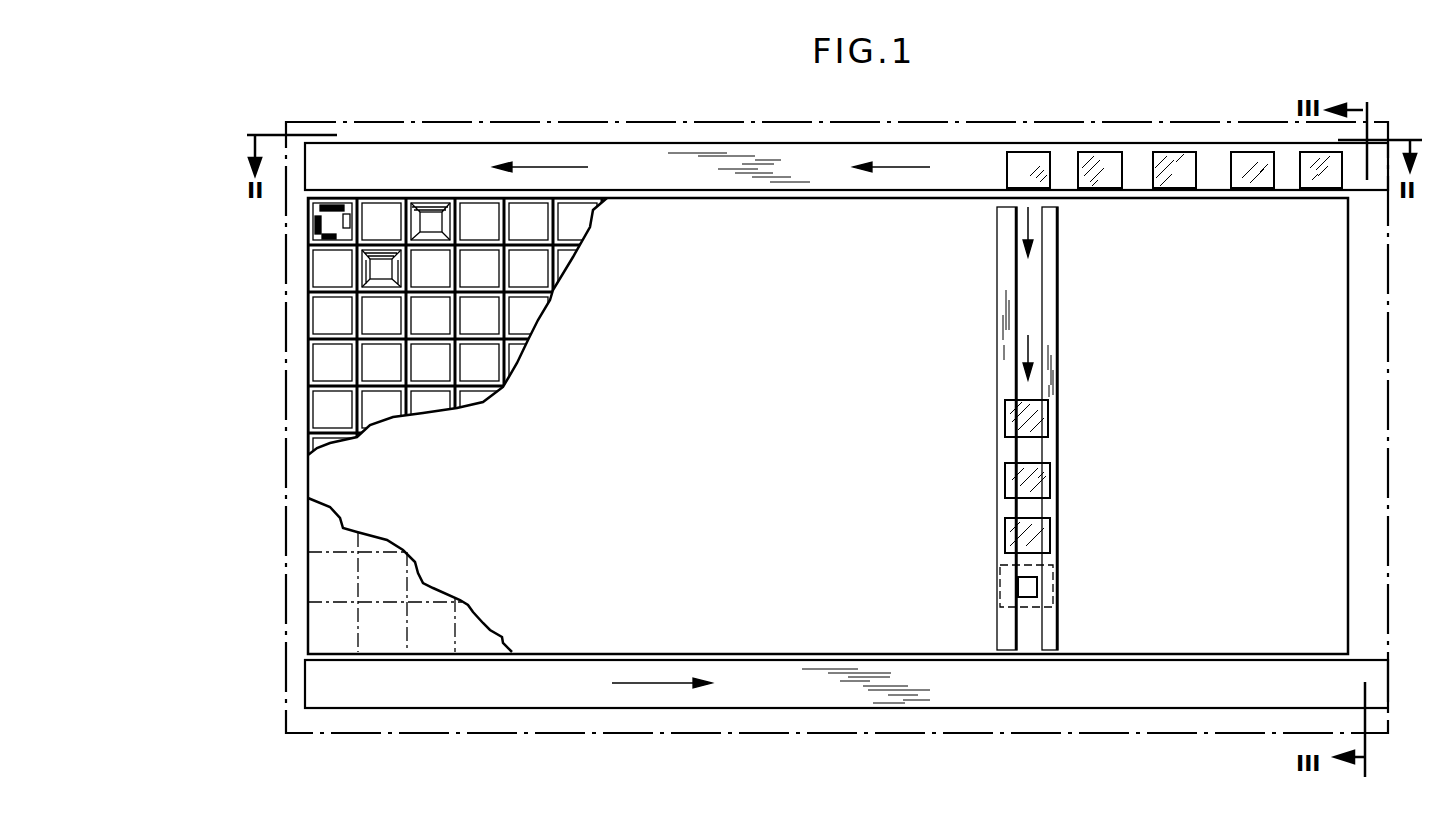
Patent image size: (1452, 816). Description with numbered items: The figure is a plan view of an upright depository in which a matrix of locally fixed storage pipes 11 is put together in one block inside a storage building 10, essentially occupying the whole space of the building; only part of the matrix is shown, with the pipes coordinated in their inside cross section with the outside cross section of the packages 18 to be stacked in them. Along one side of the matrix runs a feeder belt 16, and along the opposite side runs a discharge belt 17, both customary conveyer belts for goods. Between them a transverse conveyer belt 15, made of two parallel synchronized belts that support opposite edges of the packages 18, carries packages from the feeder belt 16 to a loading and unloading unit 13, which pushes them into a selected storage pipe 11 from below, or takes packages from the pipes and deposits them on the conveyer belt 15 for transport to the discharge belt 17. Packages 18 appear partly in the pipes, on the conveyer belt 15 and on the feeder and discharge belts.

The storage building 10 is at (648, 122).
The storage pipes 11 is at (477, 360).
The loading and unloading unit 13 is at (1040, 587).
The conveyer belt 15 is at (1010, 265).
The feeder belt 16 is at (957, 162).
The discharge belt 17 is at (775, 678).
The packages 18 is at (1165, 158).